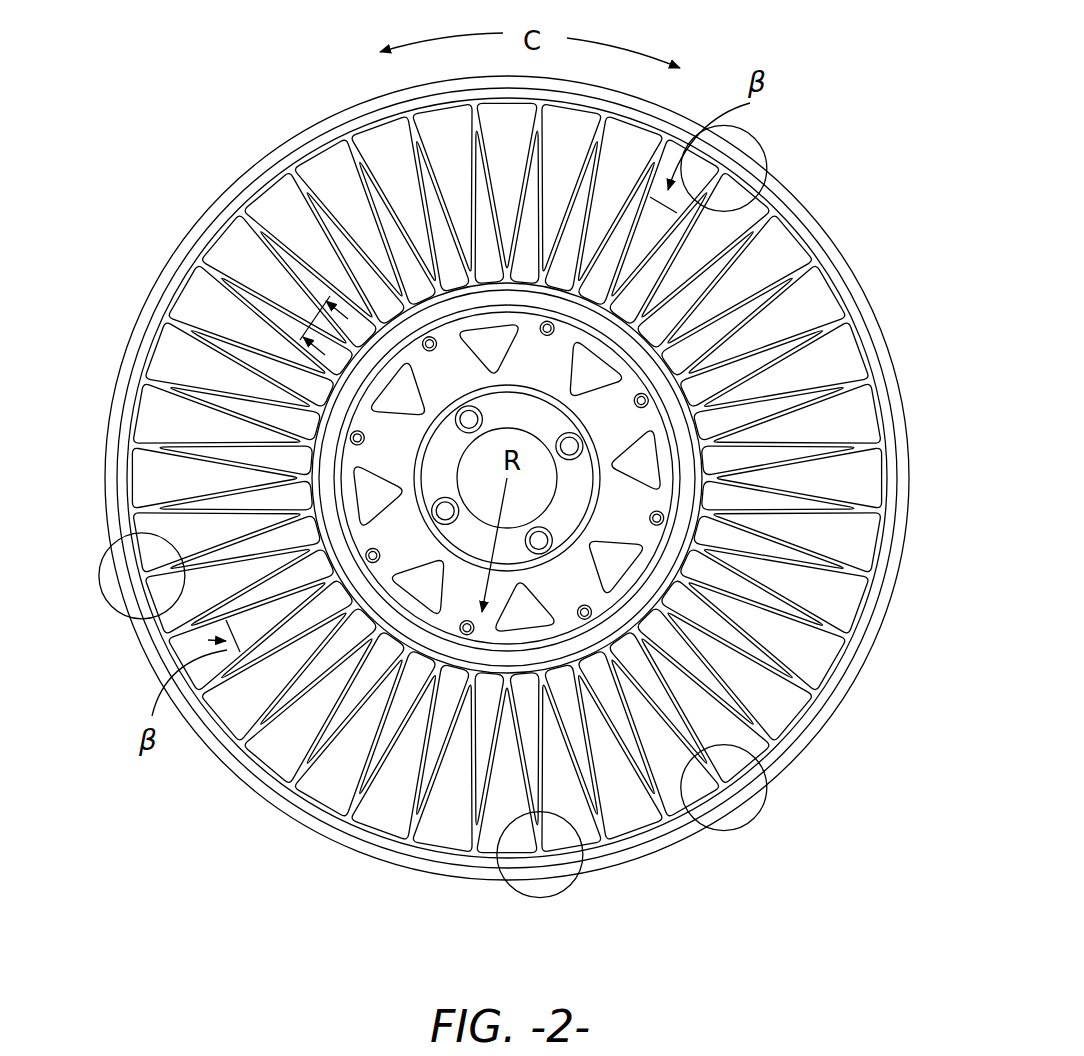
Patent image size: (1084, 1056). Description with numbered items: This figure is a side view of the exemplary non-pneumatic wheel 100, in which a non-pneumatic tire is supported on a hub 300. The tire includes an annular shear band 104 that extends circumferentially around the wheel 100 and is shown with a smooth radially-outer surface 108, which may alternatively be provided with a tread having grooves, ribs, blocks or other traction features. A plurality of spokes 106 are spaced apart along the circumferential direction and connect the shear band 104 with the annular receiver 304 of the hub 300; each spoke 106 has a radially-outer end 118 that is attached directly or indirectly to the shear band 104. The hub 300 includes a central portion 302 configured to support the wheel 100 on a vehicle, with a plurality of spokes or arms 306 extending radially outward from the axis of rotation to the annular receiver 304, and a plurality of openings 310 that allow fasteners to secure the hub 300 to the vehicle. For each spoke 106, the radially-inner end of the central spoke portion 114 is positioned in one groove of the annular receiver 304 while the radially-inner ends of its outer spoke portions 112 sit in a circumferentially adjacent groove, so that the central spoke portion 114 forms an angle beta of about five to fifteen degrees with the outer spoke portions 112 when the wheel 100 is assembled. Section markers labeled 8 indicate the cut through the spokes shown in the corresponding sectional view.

The non-pneumatic wheel 100 is at (192, 148).
The annular shear band 104 is at (372, 856).
The spoke 106 is at (190, 305).
The radially-outer surface 108 is at (856, 257).
The outer spoke portion 112 is at (98, 538).
The central spoke portion 114 is at (150, 623).
The radially-outer end 118 is at (263, 158).
The hub 300 is at (788, 235).
The central portion 302 is at (392, 437).
The annular receiver 304 is at (421, 298).
The arm 306 is at (617, 425).
The opening 310 is at (487, 415).
The section line 8- 8 is at (309, 320).